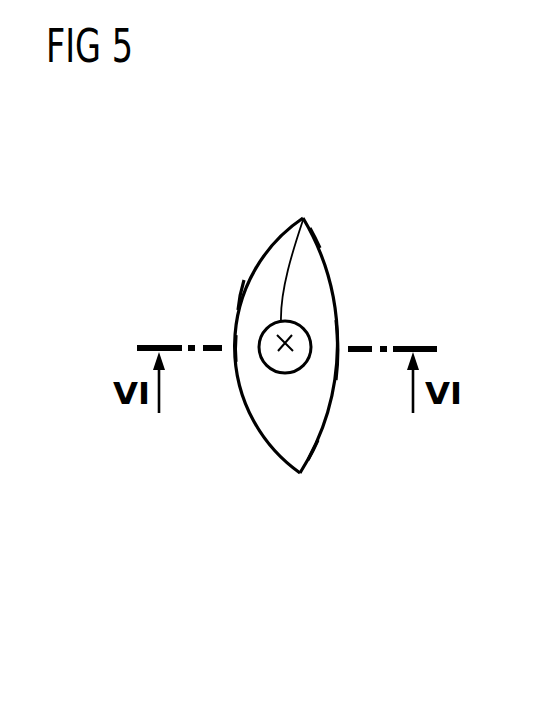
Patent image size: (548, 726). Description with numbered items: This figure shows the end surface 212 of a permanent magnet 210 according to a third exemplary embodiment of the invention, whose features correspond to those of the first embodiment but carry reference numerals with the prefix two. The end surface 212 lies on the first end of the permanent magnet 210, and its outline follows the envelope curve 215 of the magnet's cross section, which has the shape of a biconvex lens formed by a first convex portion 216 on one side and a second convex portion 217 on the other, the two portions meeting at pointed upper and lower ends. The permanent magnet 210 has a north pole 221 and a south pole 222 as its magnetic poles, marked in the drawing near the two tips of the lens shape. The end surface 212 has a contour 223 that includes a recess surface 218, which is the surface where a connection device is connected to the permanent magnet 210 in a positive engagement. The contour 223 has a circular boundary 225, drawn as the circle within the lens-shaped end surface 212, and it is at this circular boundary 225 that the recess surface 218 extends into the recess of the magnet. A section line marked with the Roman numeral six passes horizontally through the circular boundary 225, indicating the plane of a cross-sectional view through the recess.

The permanent magnet 210 is at (189, 178).
The end surface 212 is at (265, 270).
The envelope curve 215 is at (300, 476).
The first convex portion 216 is at (338, 335).
The second convex portion 217 is at (239, 293).
The recess surface 218 is at (280, 355).
The north pole 221 is at (317, 238).
The south pole 222 is at (313, 453).
The contour 223 is at (243, 333).
The circular boundary 225 is at (306, 220).